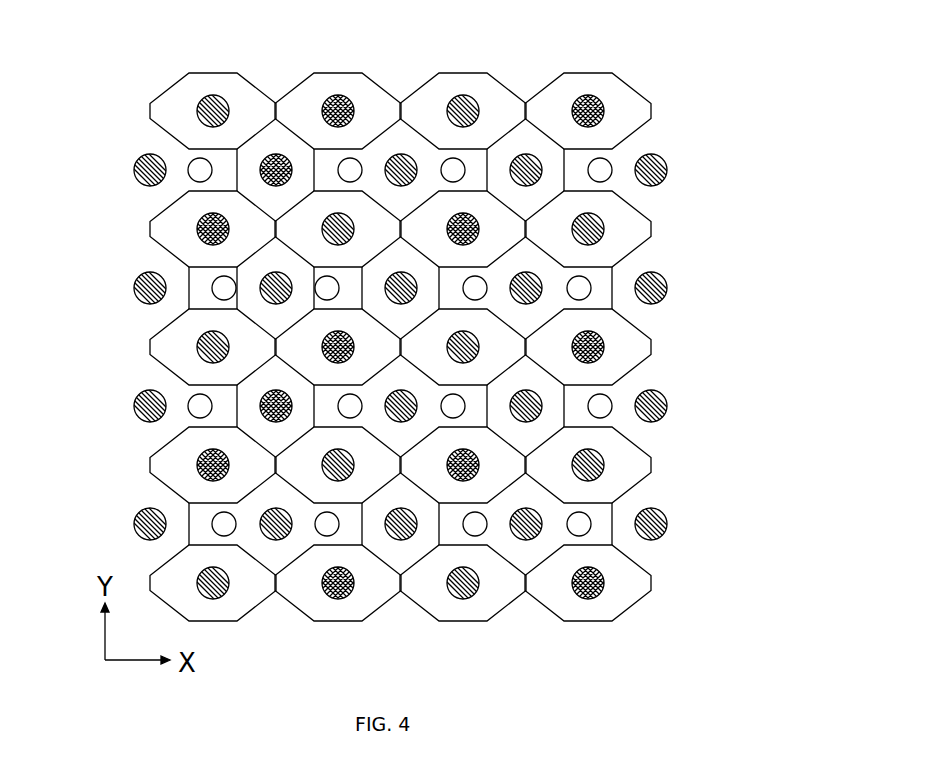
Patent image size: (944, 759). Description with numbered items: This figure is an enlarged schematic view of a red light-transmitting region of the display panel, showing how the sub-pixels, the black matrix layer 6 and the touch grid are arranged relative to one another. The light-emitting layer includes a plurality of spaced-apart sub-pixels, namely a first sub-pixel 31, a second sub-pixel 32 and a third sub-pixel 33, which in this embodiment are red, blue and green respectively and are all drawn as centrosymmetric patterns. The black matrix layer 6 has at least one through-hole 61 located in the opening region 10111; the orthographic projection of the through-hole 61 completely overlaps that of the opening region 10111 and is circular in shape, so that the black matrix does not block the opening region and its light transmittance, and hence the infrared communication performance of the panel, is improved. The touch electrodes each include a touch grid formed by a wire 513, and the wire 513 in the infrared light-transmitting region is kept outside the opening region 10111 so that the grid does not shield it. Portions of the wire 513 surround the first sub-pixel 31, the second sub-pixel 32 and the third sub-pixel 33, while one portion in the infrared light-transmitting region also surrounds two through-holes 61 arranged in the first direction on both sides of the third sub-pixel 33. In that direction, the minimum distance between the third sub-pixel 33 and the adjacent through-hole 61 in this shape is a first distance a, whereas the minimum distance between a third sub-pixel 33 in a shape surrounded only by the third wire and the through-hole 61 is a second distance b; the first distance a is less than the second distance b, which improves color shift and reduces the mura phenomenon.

The first sub-pixel 31 is at (218, 105).
The second sub-pixel 32 is at (333, 105).
The third sub-pixel 33 is at (273, 172).
The black matrix layer 6 is at (470, 83).
The opening region 10111 is at (602, 158).
The through-hole 61 is at (695, 91).
The wire 513 is at (653, 223).
The first distance a is at (511, 288).
The second distance b is at (463, 288).